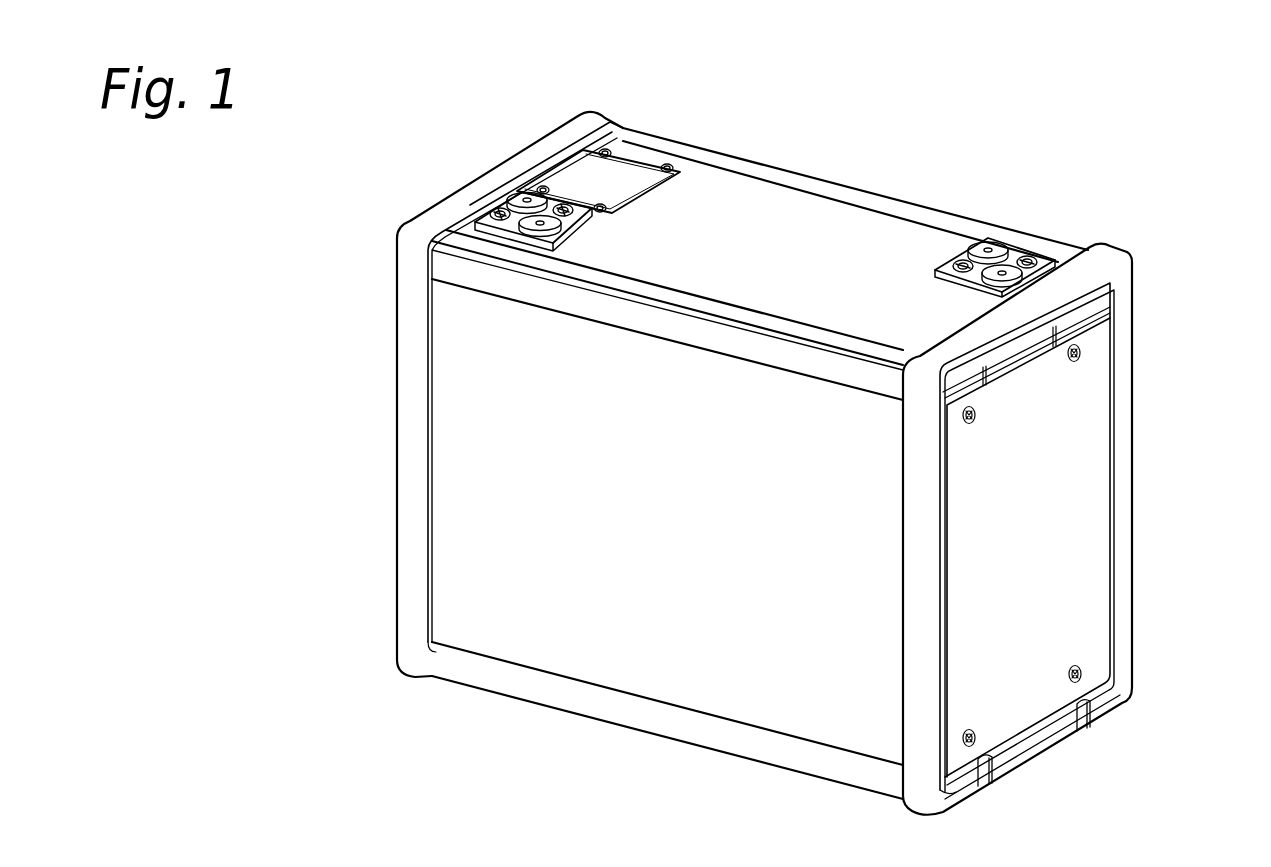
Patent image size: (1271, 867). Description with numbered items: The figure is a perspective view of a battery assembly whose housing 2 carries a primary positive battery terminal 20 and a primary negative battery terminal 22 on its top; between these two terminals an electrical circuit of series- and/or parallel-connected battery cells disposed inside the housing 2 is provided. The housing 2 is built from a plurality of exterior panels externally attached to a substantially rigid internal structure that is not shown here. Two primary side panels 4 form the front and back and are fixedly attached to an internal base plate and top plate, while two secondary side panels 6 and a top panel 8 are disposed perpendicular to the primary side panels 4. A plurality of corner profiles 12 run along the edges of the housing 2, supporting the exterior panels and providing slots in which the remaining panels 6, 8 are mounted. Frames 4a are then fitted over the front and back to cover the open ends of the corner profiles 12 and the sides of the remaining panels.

The housing 2 is at (960, 149).
The primary side panel 4 is at (1037, 610).
The frame 4a is at (413, 357).
The secondary side panel 6 is at (483, 473).
The top panel 8 is at (762, 235).
The corner profile 12 is at (866, 200).
The primary positive battery terminal 20 is at (500, 207).
The primary negative battery terminal 22 is at (1018, 252).